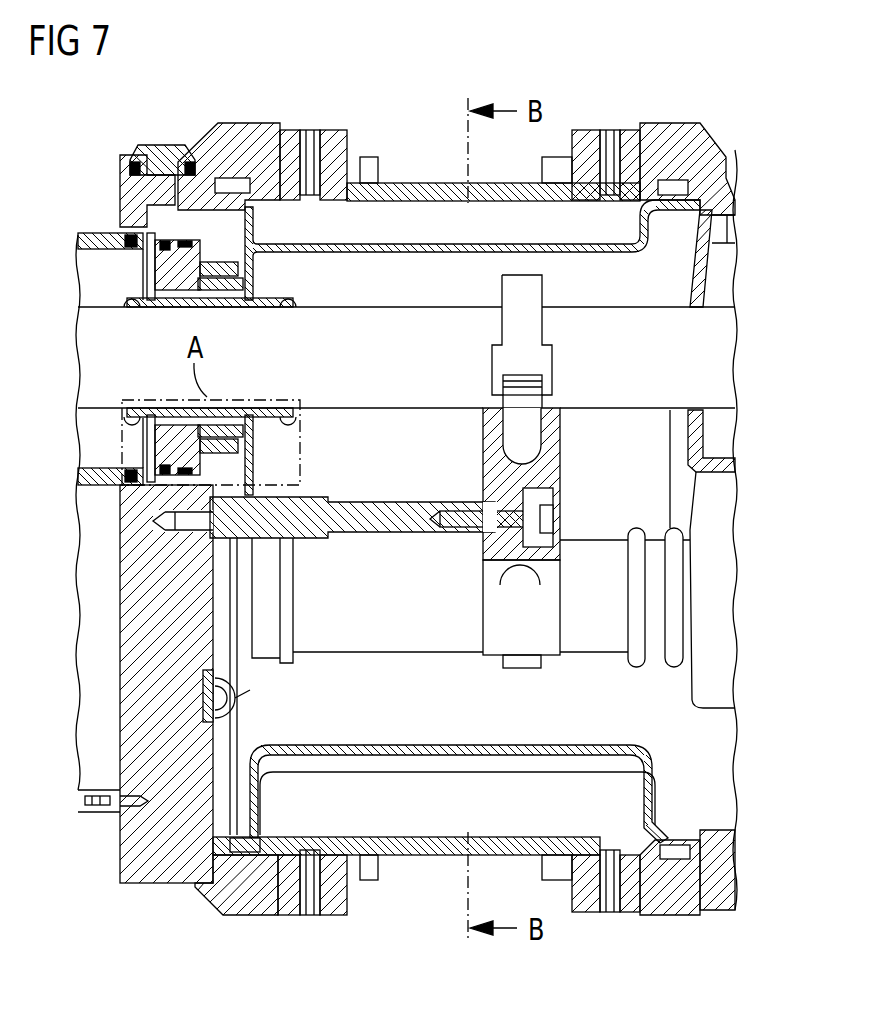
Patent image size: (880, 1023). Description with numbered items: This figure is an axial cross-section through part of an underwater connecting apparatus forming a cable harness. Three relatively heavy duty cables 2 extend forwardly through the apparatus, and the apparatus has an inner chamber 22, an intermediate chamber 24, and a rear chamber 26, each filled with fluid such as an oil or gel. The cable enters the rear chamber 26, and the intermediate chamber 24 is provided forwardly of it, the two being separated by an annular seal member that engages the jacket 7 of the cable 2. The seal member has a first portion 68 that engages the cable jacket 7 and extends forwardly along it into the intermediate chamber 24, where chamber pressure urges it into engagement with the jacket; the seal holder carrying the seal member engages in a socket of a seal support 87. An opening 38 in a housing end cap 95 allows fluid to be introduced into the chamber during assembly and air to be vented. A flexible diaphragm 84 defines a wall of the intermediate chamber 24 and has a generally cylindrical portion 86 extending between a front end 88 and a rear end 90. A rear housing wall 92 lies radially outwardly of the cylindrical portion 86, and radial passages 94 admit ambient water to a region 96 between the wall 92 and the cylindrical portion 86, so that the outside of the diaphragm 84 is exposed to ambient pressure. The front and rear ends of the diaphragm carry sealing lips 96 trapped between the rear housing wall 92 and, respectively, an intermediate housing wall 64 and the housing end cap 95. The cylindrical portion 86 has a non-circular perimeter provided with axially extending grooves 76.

The heavy duty cable 2 is at (72, 389).
The cable jacket 7 is at (83, 330).
The inner chamber 22 is at (727, 281).
The intermediate chamber 24 is at (384, 291).
The rear chamber 26 is at (85, 280).
The opening 38 is at (167, 170).
The intermediate housing wall 64 is at (713, 888).
The first portion of annular seal member 68 is at (273, 310).
The grooves 76 is at (423, 762).
The flexible diaphragm 84 is at (400, 228).
The cylindrical portion 86 is at (427, 247).
The seal support 87 is at (130, 198).
The front end 88 is at (688, 160).
The rear end 90 is at (230, 160).
The rear housing wall 92 is at (428, 857).
The radial passages 94 is at (310, 898).
The housing end cap 95 is at (160, 872).
The sealing lips 96 is at (384, 822).